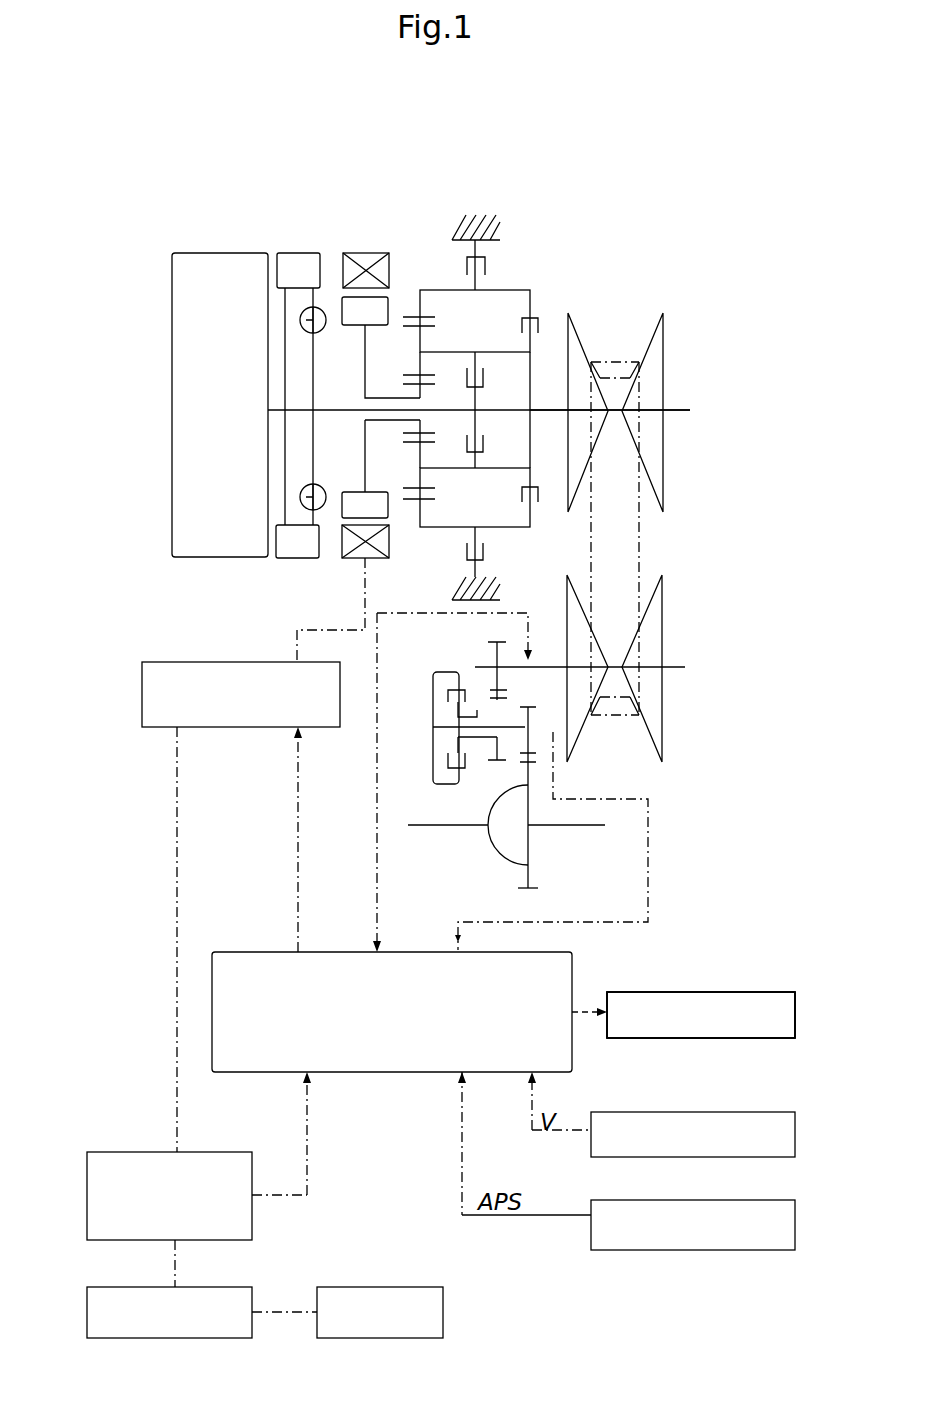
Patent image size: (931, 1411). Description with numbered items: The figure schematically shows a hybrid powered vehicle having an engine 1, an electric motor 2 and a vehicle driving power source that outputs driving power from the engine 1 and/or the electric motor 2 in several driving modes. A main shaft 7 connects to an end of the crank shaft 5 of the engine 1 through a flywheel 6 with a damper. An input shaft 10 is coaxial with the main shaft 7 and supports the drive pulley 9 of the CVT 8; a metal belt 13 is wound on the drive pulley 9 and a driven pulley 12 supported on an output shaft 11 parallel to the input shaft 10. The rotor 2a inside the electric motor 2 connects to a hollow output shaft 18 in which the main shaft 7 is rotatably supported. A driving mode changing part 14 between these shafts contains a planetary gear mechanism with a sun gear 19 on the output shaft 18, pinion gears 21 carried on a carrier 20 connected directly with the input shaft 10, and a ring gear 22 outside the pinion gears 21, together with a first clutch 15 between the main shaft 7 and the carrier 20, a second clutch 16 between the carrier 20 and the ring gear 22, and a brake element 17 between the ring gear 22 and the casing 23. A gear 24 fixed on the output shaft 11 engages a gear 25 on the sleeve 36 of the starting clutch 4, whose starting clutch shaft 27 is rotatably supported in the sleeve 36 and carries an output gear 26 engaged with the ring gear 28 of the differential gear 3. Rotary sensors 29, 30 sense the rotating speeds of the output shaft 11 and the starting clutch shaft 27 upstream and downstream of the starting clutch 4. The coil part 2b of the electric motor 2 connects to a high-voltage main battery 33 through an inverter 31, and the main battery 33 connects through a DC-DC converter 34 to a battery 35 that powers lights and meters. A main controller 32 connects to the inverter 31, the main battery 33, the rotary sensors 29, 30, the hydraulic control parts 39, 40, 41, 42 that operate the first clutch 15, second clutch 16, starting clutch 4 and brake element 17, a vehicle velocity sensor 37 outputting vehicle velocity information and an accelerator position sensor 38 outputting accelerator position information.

The engine 1 is at (213, 252).
The electric motor 2 is at (356, 252).
The rotor 2a is at (388, 500).
The coil part 2b is at (348, 545).
The differential gear 3 is at (497, 850).
The starting clutch 4 is at (443, 685).
The crank shaft 5 is at (278, 410).
The flywheel 6 is at (291, 559).
The main shaft 7 is at (345, 420).
The CVT 8 is at (708, 506).
The drive pulley 9 is at (665, 348).
The input shaft 10 is at (683, 410).
The output shaft 11 is at (683, 667).
The driven pulley 12 is at (664, 608).
The metal belt 13 is at (640, 528).
The driving mode changing part 14 is at (430, 287).
The first clutch 15 is at (489, 386).
The second clutch 16 is at (543, 312).
The brake element 17 is at (494, 265).
The output shaft 18 is at (378, 396).
The sun gear 19 is at (435, 383).
The carrier 20 is at (503, 468).
The pinion gears 21 is at (432, 338).
The ring gear 22 is at (503, 530).
The casing 23 is at (476, 222).
The gear 24 is at (492, 657).
The gear 25 is at (495, 745).
The output gear 26 is at (535, 716).
The starting clutch shaft 27 is at (505, 727).
The ring gear 28 is at (528, 878).
The rotary sensor 29 is at (537, 648).
The rotary sensor 30 is at (541, 730).
The inverter 31 is at (180, 660).
The main controller 32 is at (385, 1075).
The main battery 33 is at (125, 1150).
The DC-DC converter 34 is at (128, 1286).
The battery 35 is at (412, 1286).
The sleeve 36 is at (472, 716).
The vehicle velocity sensor 37 is at (797, 1132).
The accelerator position sensor 38 is at (797, 1220).
The hydraulic control part 39 is at (635, 992).
The hydraulic control part 40 is at (701, 1015).
The hydraulic control part 41 is at (701, 1015).
The hydraulic control part 42 is at (701, 1015).